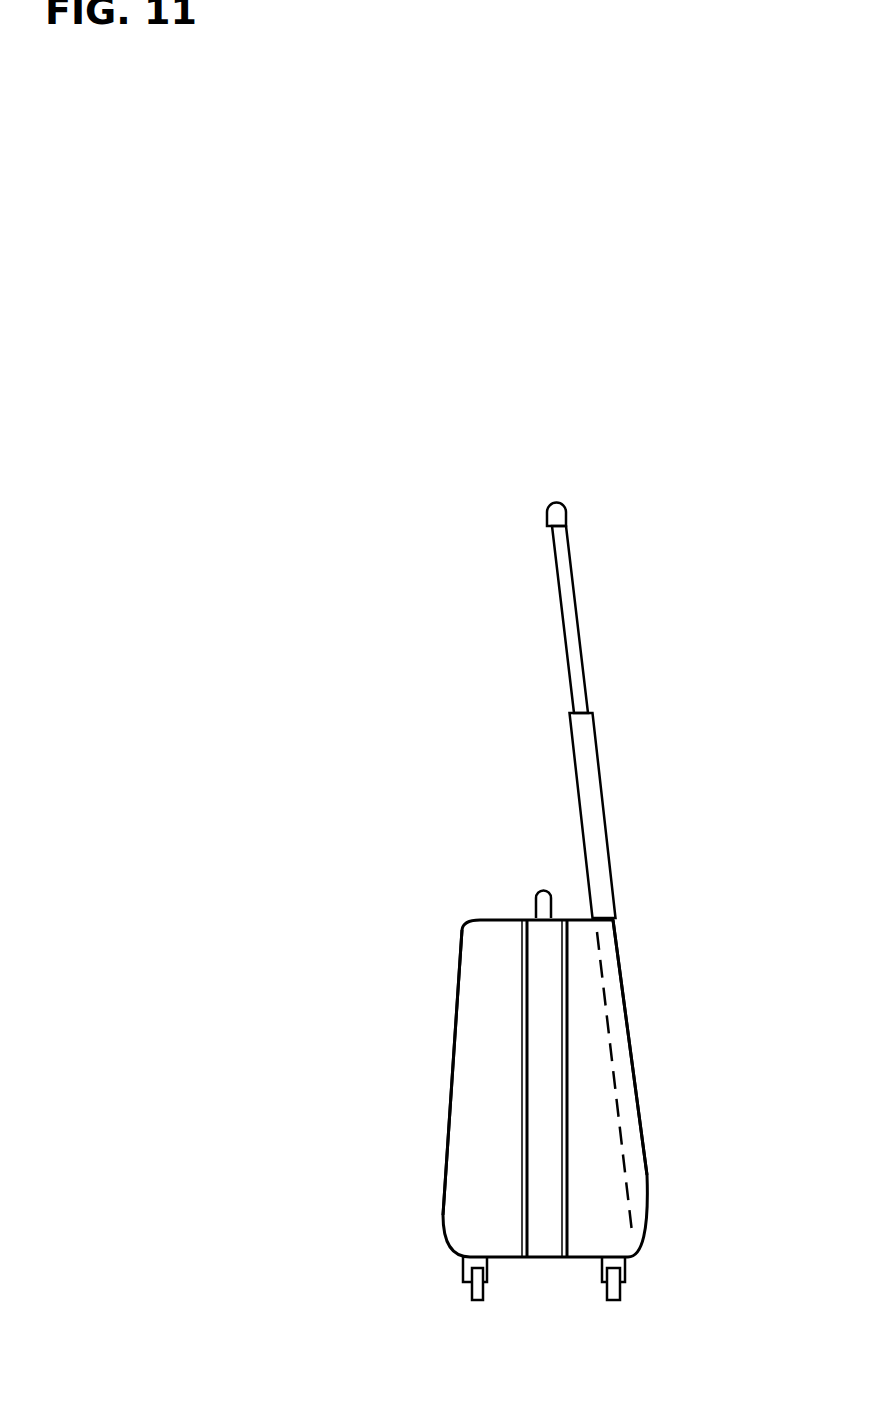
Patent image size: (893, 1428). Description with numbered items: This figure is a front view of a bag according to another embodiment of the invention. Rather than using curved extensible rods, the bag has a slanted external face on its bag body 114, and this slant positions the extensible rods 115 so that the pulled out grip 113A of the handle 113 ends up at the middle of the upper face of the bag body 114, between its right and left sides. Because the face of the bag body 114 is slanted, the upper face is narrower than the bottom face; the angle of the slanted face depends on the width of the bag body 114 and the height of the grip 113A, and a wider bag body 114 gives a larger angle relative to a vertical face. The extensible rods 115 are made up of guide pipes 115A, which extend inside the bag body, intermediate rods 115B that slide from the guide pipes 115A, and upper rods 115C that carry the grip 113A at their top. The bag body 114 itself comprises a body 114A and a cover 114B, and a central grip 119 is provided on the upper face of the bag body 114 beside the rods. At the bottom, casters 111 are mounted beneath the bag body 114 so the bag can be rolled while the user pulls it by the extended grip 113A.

The casters 111 is at (475, 1290).
The handle 113 is at (544, 509).
The grip 113A is at (484, 535).
The bag body 114 is at (456, 894).
The body 114A is at (600, 1192).
The cover 114B is at (465, 1172).
The extensible rods 115 is at (657, 879).
The guide pipes 115A is at (620, 1032).
The intermediate rods 115B is at (590, 765).
The upper rods 115C is at (573, 628).
The central grip 119 is at (543, 892).